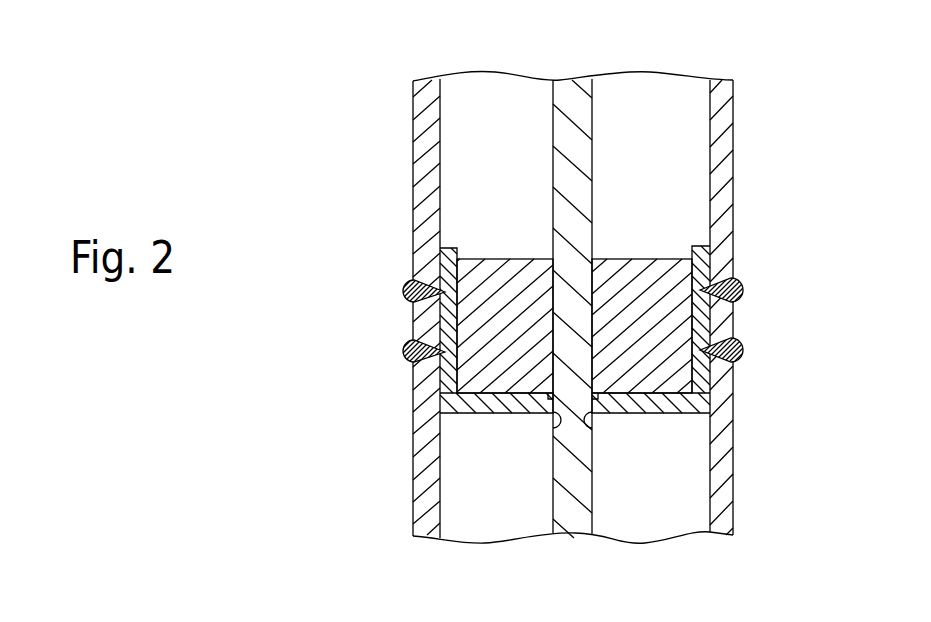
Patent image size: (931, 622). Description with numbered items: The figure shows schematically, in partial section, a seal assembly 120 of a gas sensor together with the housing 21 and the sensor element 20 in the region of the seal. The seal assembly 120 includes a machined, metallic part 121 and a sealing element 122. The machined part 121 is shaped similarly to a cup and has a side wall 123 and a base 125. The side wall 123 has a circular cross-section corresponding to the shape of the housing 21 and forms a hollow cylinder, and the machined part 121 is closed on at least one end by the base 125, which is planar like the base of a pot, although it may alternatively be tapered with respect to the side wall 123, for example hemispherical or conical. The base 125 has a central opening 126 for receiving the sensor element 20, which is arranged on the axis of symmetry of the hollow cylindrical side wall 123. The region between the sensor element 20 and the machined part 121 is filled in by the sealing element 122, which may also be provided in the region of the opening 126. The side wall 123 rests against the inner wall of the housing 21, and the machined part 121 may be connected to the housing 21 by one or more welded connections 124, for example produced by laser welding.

The sensor element 20 is at (578, 108).
The housing 21 is at (428, 182).
The seal assembly 120 is at (497, 205).
The machined, metallic part 121 is at (445, 403).
The sealing element 122 is at (483, 377).
The side wall 123 is at (448, 268).
The welded connections 124 is at (410, 352).
The base 125 is at (485, 405).
The central opening 126 is at (563, 393).